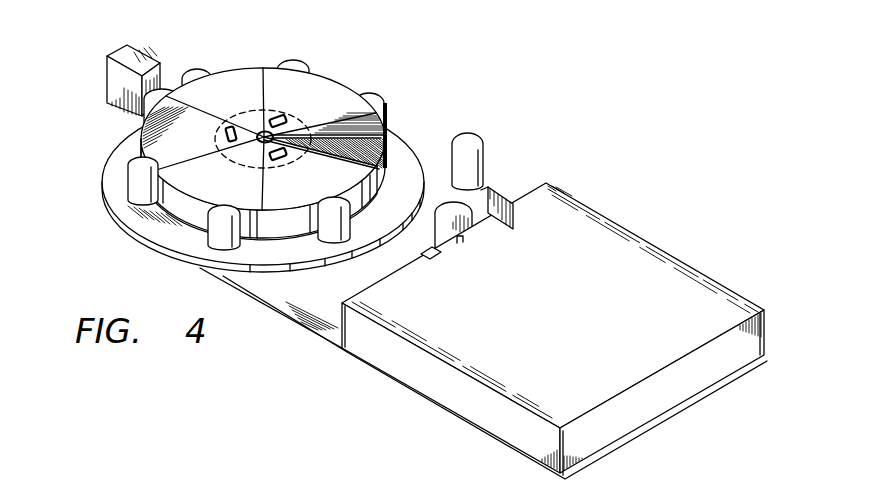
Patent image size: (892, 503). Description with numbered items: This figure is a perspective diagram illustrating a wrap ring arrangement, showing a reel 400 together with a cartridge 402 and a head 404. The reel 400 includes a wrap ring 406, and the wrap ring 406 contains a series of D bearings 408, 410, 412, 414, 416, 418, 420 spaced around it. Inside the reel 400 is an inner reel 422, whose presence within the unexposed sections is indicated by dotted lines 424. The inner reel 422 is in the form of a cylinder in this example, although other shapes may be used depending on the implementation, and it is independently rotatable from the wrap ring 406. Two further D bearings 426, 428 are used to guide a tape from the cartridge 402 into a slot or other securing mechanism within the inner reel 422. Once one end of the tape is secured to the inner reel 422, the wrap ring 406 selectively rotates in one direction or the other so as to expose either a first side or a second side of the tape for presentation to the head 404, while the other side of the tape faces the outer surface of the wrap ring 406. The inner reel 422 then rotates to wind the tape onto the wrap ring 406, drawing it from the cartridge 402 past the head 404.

The reel 400 is at (255, 153).
The cartridge 402 is at (643, 238).
The head 404 is at (107, 80).
The wrap ring 406 is at (193, 221).
The D bearing 408 is at (333, 204).
The D bearing 410 is at (222, 207).
The D bearing 412 is at (130, 160).
The D bearing 414 is at (161, 95).
The D bearing 416 is at (208, 68).
The D bearing 418 is at (288, 61).
The D bearing 420 is at (381, 96).
The inner reel 422 is at (386, 160).
The dotted lines 424 is at (290, 112).
The D bearing 426 is at (485, 167).
The D bearing 428 is at (446, 242).